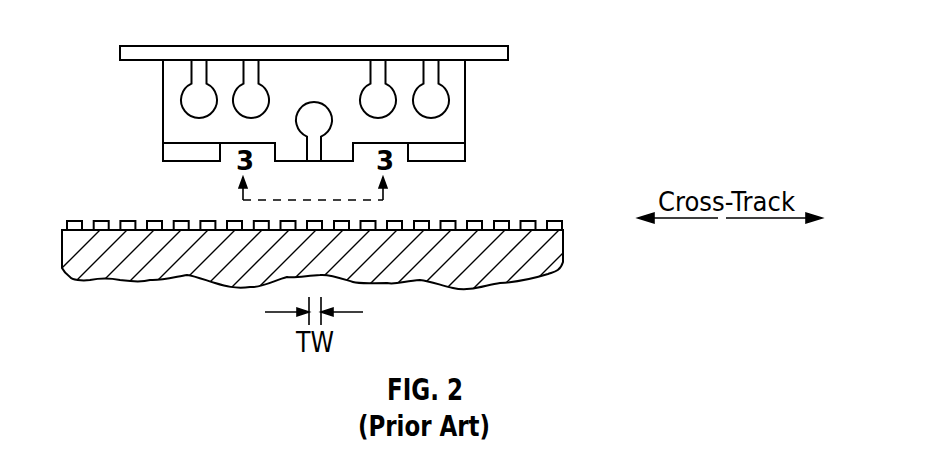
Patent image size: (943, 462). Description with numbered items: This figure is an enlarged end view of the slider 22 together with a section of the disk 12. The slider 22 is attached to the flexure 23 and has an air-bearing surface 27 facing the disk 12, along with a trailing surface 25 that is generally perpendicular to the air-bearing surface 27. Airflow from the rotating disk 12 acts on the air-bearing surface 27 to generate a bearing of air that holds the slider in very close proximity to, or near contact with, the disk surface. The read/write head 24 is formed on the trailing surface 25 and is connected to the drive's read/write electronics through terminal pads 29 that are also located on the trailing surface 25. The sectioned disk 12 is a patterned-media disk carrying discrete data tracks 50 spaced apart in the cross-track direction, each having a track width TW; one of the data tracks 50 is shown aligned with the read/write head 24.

The disk 12 is at (546, 262).
The slider 22 is at (467, 128).
The flexure 23 is at (497, 46).
The read/write head 24 is at (320, 110).
The trailing surface 25 is at (177, 130).
The air-bearing surface 27 is at (190, 162).
The terminal pads 29 is at (235, 99).
The discrete data tracks 50 is at (100, 220).